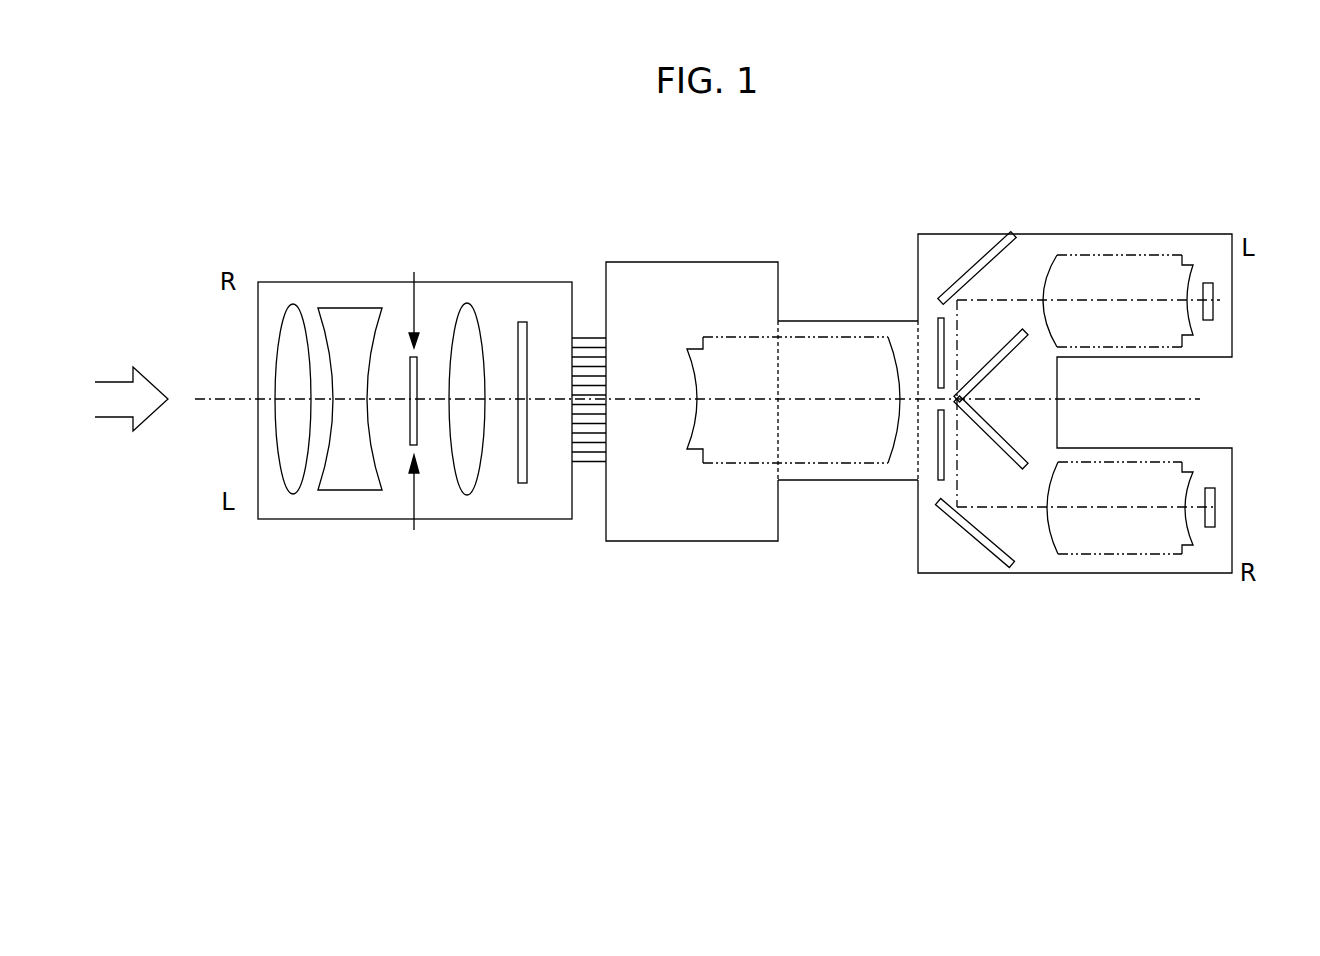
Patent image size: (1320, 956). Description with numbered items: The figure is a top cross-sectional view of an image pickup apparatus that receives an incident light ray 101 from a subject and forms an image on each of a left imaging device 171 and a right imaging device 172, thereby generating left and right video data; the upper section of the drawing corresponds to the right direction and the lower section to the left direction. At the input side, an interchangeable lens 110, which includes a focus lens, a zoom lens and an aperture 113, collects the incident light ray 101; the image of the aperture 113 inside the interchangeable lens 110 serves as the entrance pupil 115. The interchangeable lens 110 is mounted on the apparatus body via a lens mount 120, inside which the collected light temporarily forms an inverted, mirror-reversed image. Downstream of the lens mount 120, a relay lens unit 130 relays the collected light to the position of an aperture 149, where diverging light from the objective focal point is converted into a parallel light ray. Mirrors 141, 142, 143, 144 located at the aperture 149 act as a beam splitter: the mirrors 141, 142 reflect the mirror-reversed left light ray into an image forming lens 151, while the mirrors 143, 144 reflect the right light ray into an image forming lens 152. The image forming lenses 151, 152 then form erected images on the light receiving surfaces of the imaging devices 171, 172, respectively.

The incident light ray 101 is at (113, 382).
The interchangeable lens 110 is at (362, 282).
The aperture 113 is at (412, 430).
The entrance pupil 115 is at (522, 322).
The lens mount 120 is at (632, 262).
The relay lens unit 130 is at (688, 252).
The mirror 141 is at (998, 358).
The mirror 142 is at (993, 255).
The mirror 143 is at (1000, 440).
The mirror 144 is at (987, 553).
The aperture 149 is at (940, 470).
The image forming lens 151 is at (1105, 255).
The image forming lens 152 is at (1122, 555).
The left imaging device 171 is at (1213, 310).
The right imaging device 172 is at (1215, 513).